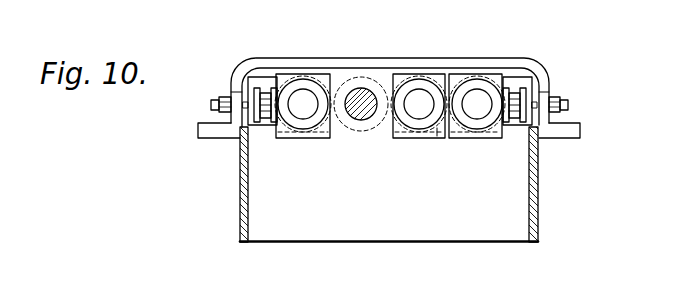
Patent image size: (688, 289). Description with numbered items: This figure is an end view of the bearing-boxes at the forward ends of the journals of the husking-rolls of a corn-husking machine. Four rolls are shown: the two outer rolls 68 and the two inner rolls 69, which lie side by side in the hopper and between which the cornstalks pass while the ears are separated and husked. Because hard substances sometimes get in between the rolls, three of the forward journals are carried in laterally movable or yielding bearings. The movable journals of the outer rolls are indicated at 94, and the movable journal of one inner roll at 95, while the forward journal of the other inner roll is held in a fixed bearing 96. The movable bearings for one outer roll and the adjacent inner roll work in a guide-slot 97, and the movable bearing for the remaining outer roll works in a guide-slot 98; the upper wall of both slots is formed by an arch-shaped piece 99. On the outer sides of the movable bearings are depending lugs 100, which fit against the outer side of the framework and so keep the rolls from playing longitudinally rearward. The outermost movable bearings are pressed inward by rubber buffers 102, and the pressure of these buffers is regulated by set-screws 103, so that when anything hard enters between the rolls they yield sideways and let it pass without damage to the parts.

The outer husking-roll 68 is at (390, 104).
The inner husking-roll 69 is at (376, 144).
The movable journal bearing of outer roll 94 is at (274, 128).
The movable journal bearing of inner roll 95 is at (440, 136).
The fixed bearing 96 is at (345, 128).
The guide-slot 97 is at (515, 83).
The guide-slot 98 is at (267, 80).
The arch-shaped piece 99 is at (412, 59).
The depending lug 100 is at (311, 140).
The rubber buffer 102 is at (262, 123).
The set-screw 103 is at (212, 105).